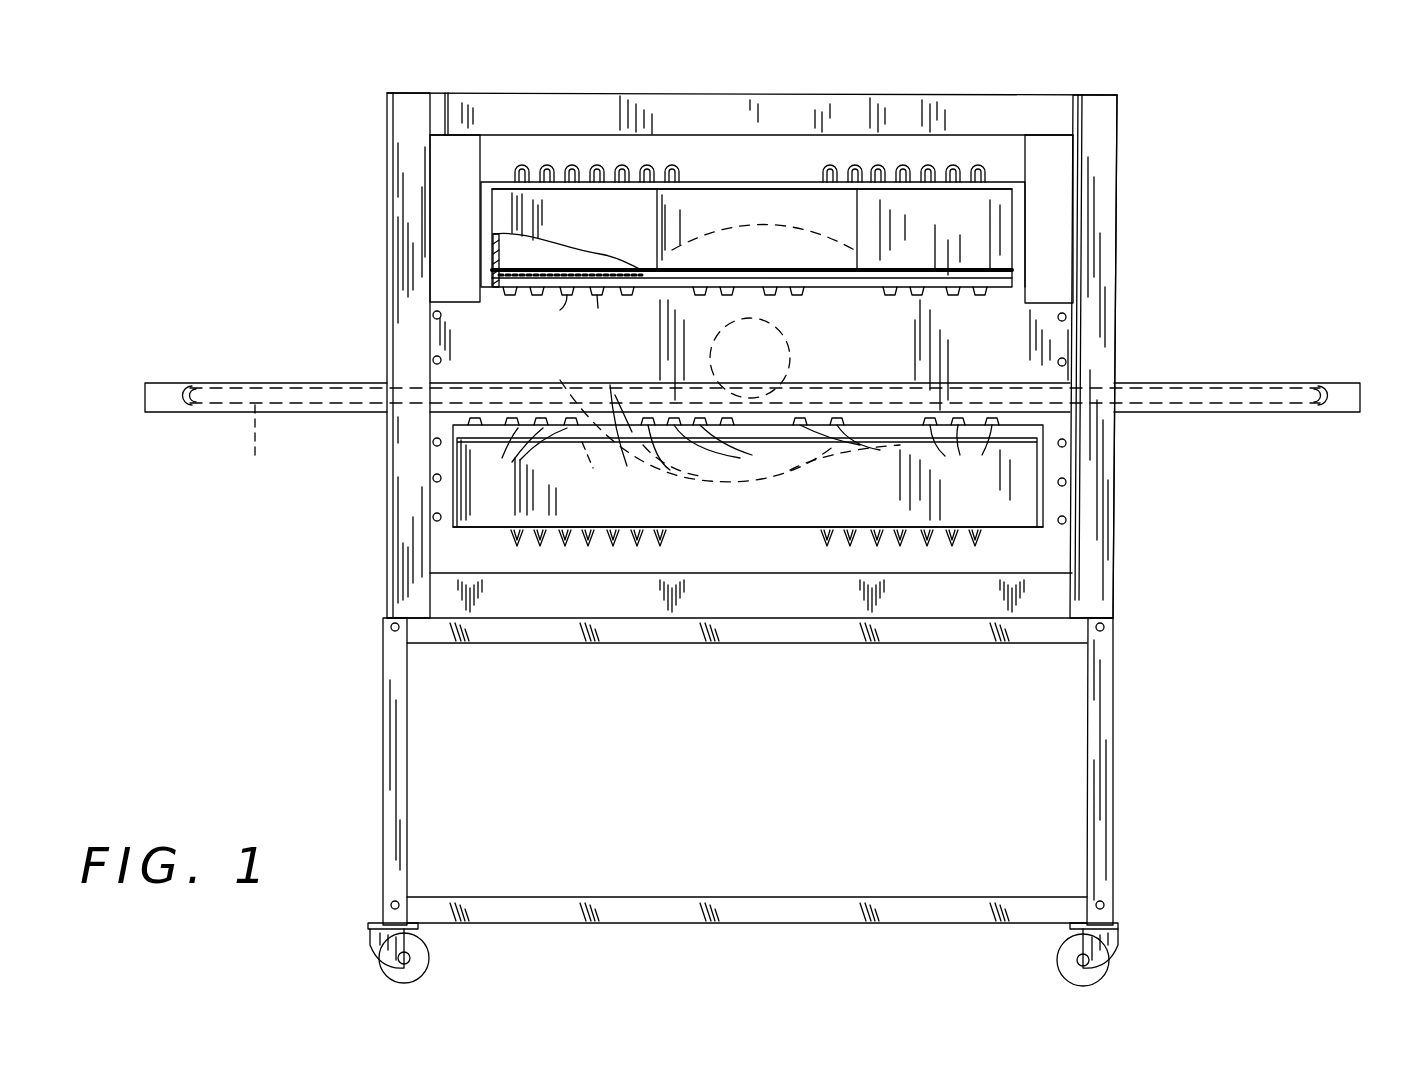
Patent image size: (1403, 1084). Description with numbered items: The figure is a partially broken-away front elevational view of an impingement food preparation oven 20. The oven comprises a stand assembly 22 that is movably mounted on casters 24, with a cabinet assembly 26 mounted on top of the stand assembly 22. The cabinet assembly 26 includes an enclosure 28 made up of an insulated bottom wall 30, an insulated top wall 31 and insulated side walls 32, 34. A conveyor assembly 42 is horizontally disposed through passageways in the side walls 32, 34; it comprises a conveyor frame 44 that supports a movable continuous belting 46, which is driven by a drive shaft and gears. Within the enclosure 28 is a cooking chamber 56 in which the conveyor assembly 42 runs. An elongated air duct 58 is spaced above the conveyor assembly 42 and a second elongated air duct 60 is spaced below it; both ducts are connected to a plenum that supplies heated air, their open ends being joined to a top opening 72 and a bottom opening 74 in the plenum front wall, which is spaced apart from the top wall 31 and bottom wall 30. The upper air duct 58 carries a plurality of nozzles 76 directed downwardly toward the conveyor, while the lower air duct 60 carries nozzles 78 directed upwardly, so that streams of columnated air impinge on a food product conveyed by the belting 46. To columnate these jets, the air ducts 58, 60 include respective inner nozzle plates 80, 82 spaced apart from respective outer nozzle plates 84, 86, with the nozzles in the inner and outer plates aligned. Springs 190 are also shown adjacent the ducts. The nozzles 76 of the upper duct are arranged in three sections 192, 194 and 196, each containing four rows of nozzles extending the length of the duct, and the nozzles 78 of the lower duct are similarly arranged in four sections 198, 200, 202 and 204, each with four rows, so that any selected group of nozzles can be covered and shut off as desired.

The impingement food preparation oven 20 is at (1200, 218).
The stand assembly 22 is at (829, 802).
The casters 24 is at (1112, 948).
The cabinet assembly 26 is at (741, 335).
The enclosure 28 is at (1117, 345).
The insulated bottom wall 30 is at (1052, 598).
The insulated top wall 31 is at (905, 93).
The insulated side wall 32 is at (385, 215).
The insulated side wall 34 is at (1117, 205).
The conveyor assembly 42 is at (751, 398).
The conveyor frame 44 is at (176, 412).
The continuous belting 46 is at (255, 443).
The cooking chamber 56 is at (582, 362).
The elongated air duct 58 is at (507, 210).
The elongated air duct 60 is at (482, 510).
The top opening 72 is at (754, 265).
The bottom opening 74 is at (749, 478).
The nozzles 76 is at (572, 267).
The nozzles 78 is at (733, 450).
The inner nozzle plate 80 is at (597, 270).
The inner nozzle plate 82 is at (596, 467).
The outer nozzle plate 84 is at (596, 290).
The outer nozzle plate 86 is at (633, 438).
The springs 190 is at (985, 178).
The nozzle section 192 is at (506, 310).
The nozzle section 194 is at (745, 318).
The nozzle section 196 is at (892, 315).
The nozzle section 198 is at (550, 466).
The nozzle section 200 is at (676, 466).
The nozzle section 202 is at (842, 465).
The nozzle section 204 is at (1005, 466).